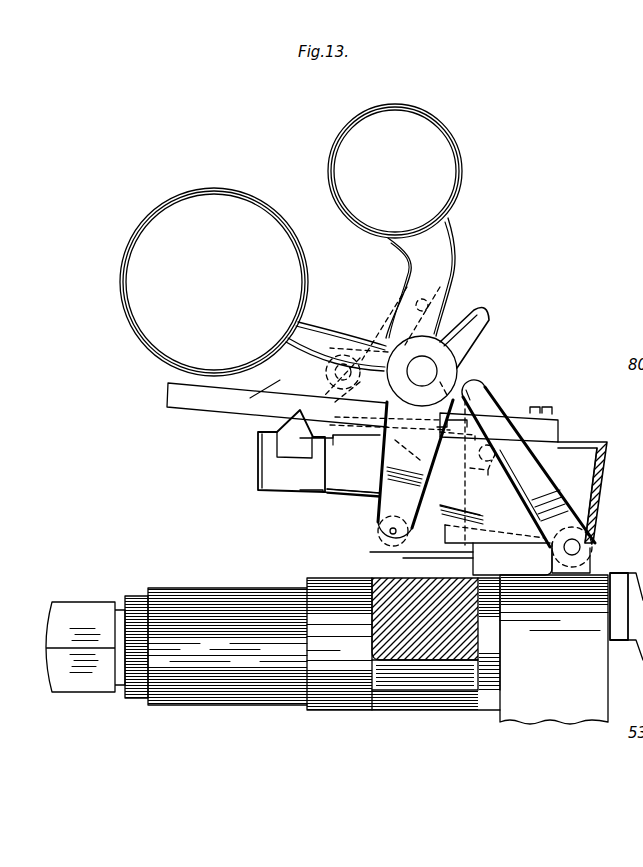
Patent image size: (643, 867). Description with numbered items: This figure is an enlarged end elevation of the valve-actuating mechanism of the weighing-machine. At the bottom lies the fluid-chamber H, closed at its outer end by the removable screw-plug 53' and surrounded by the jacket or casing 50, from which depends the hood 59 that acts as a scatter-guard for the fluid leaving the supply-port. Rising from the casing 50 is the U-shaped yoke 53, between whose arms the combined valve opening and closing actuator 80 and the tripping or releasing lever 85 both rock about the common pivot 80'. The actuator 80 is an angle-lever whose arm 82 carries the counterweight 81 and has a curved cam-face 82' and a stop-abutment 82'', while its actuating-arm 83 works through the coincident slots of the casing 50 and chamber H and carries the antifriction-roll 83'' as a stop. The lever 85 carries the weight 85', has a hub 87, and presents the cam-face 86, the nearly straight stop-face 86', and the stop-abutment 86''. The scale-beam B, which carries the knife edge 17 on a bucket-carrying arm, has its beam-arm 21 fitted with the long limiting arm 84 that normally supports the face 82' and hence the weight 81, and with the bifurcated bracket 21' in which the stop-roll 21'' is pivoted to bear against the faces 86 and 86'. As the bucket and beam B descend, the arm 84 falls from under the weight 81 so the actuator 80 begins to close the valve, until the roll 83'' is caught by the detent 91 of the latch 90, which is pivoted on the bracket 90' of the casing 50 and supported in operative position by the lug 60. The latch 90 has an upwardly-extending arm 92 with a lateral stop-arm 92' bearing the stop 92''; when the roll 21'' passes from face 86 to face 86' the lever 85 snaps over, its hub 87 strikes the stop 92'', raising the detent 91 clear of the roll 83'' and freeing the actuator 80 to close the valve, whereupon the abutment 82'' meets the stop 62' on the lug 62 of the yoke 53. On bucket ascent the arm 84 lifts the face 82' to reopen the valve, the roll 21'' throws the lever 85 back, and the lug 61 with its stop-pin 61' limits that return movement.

The counterweight 81 is at (128, 272).
The weight 85' is at (413, 171).
The tripping or releasing lever 85 is at (433, 278).
The arm 82 is at (336, 331).
The common pivot 80' is at (407, 371).
The combined valve opening and closing actuator 80 is at (464, 326).
The stop-abutment 82'' is at (482, 322).
The stop 62' is at (428, 291).
The lug 62 is at (401, 318).
The stop-pin 61' is at (325, 374).
The projection or lug 61 is at (344, 374).
The stop or limiting arm 84 is at (205, 400).
The cam-face 82' is at (249, 395).
The knife edge 17 is at (290, 445).
The cam-face 86 is at (387, 458).
The stop-face 86' is at (354, 448).
The stop-abutment 86'' is at (353, 476).
The bifurcated bracket 21' is at (390, 415).
The stop 21'' is at (406, 452).
The actuating-arm 83 is at (415, 469).
The antifriction-roll 83'' is at (394, 517).
The stop 92'' is at (433, 393).
The upwardly-extending arm 92 is at (528, 463).
The stop-arm 92' is at (490, 384).
The limiting latch or stop 90 is at (536, 485).
The hub 87 is at (499, 424).
The scale-beam B is at (575, 442).
The lug or projection 60 is at (497, 453).
The U-shaped yoke 53 is at (473, 510).
The beam-arm 21 is at (489, 531).
The detent 91 is at (485, 545).
The bracket or lug 90' is at (589, 550).
The fluid-chamber H is at (250, 600).
The screw-plug 53' is at (97, 633).
The jacket or casing 50 is at (320, 582).
The hood 59 is at (500, 712).